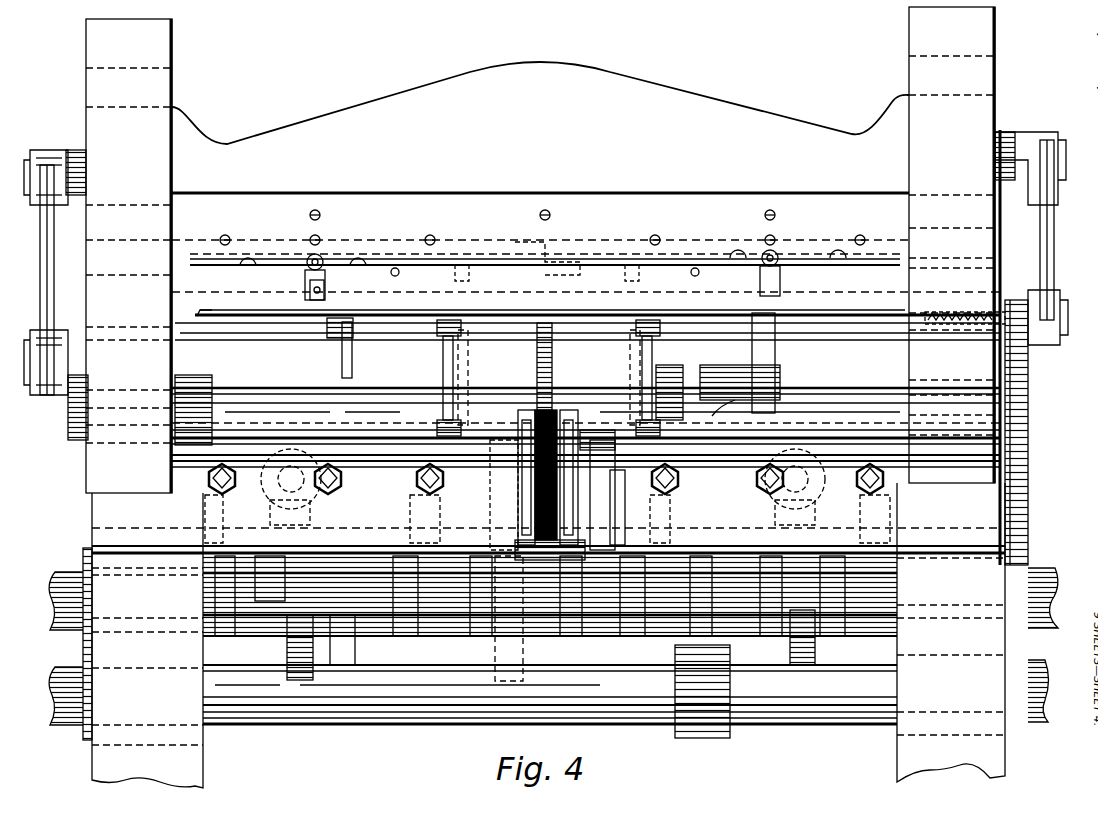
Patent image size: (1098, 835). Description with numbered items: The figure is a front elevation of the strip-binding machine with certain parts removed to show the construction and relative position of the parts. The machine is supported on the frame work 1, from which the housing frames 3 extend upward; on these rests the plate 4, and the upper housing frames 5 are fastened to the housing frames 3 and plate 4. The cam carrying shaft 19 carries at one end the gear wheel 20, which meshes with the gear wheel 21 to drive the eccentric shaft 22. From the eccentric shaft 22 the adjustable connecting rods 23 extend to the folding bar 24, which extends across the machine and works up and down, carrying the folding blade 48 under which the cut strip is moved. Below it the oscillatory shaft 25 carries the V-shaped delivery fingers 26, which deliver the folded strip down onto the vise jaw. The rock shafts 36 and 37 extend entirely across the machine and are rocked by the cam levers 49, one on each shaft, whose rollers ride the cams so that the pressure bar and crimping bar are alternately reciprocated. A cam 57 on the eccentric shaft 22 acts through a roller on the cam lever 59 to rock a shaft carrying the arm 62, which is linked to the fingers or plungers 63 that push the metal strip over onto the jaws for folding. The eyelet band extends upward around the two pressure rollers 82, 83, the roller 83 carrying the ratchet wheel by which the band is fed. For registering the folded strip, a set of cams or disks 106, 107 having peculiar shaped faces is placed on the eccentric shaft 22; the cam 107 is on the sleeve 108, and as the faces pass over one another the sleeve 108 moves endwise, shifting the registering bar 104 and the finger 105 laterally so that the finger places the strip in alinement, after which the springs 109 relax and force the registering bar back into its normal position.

The frame work 1 is at (200, 762).
The housing frames 3 is at (90, 310).
The plate 4 is at (242, 305).
The upper housing frames 5 is at (168, 83).
The shaft 19 is at (50, 606).
The gear wheel 20 is at (1028, 528).
The gear wheel 21 is at (1028, 447).
The eccentric shaft 22 is at (80, 437).
The adjustable connecting rods 23 is at (40, 249).
The folding bar 24 is at (540, 103).
The oscillatory shaft 25 is at (382, 458).
The delivery fingers 26 is at (448, 367).
The rock shaft 36 is at (82, 570).
The rock shaft 37 is at (58, 700).
The folding blade 48 is at (542, 255).
The cam levers 49 is at (738, 732).
The cam 57 is at (553, 355).
The cam lever 59 is at (537, 358).
The arm 62 is at (462, 362).
The fingers or plungers 63 is at (470, 273).
The pressure roller 82 is at (530, 450).
The pressure roller 83 is at (518, 492).
The registering bar 104 is at (284, 334).
The finger 105 is at (366, 351).
The cam or disk 106 is at (680, 455).
The cam or disk 107 is at (752, 350).
The sleeve 108 is at (780, 370).
The springs 109 is at (978, 306).